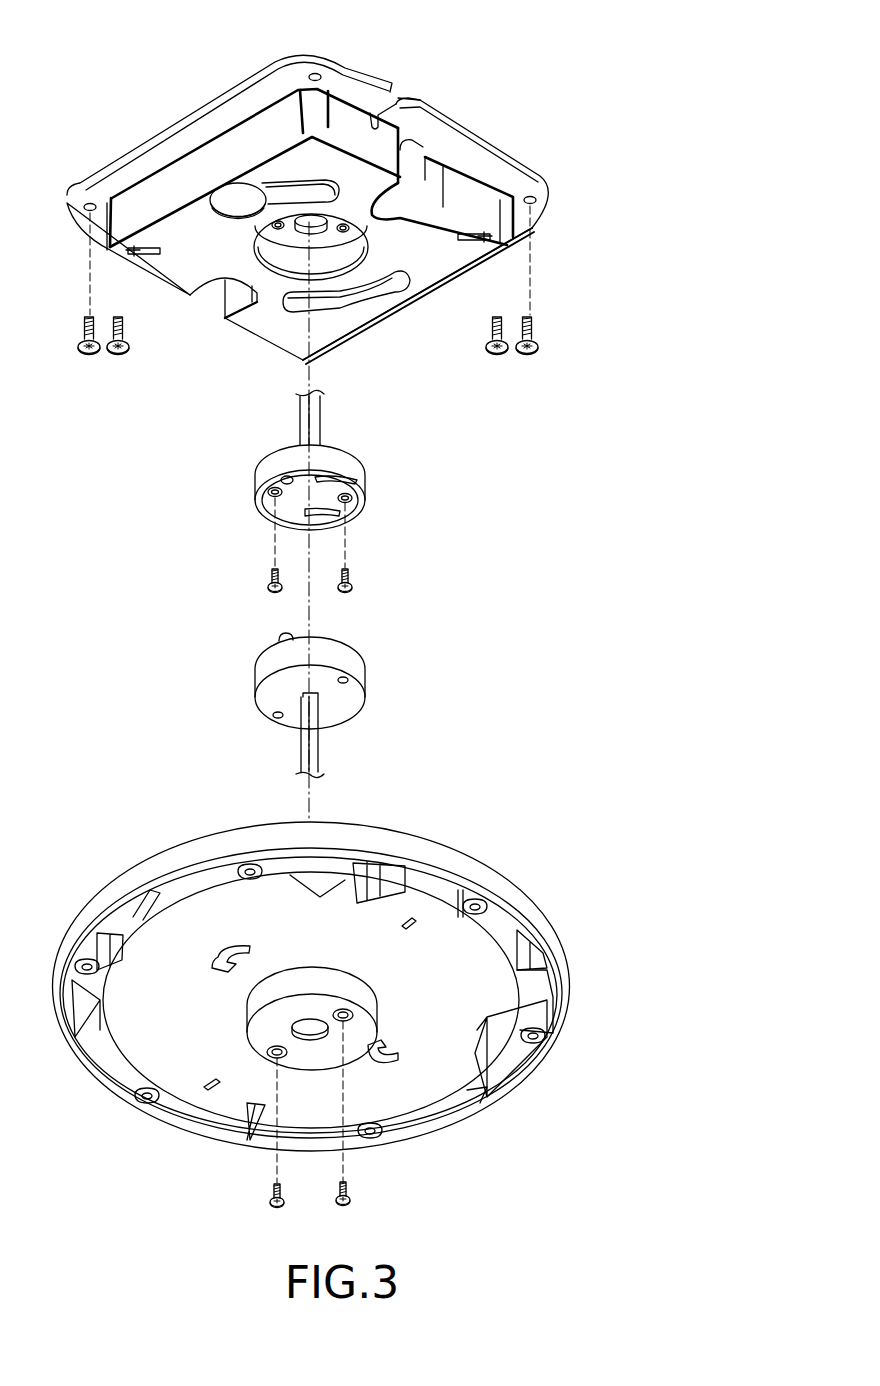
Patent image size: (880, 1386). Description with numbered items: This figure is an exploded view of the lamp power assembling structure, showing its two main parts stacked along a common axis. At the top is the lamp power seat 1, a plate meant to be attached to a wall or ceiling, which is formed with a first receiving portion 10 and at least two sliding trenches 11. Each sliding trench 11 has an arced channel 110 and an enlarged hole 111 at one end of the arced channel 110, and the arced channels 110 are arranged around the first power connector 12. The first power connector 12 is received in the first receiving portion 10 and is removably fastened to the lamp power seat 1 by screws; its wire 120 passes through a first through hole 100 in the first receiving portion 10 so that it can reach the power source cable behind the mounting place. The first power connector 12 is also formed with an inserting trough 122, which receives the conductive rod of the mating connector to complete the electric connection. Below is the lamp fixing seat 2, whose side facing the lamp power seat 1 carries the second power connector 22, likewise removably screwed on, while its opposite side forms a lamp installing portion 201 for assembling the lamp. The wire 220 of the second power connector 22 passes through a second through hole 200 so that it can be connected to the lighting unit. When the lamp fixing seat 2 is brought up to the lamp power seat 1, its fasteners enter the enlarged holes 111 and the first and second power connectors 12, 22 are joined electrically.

The lamp power seat 1 is at (324, 203).
The first receiving portion 10 is at (287, 266).
The first through hole 100 is at (340, 227).
The sliding trench 11 is at (353, 312).
The arced channel 110 is at (290, 187).
The enlarged hole 111 is at (223, 193).
The first power connector 12 is at (365, 520).
The wire 120 is at (315, 420).
The inserting trough 122 is at (323, 517).
The lamp fixing seat 2 is at (334, 1003).
The second through hole 200 is at (320, 1035).
The lamp installing portion 201 is at (190, 1058).
The second power connector 22 is at (343, 652).
The wire 220 is at (315, 748).